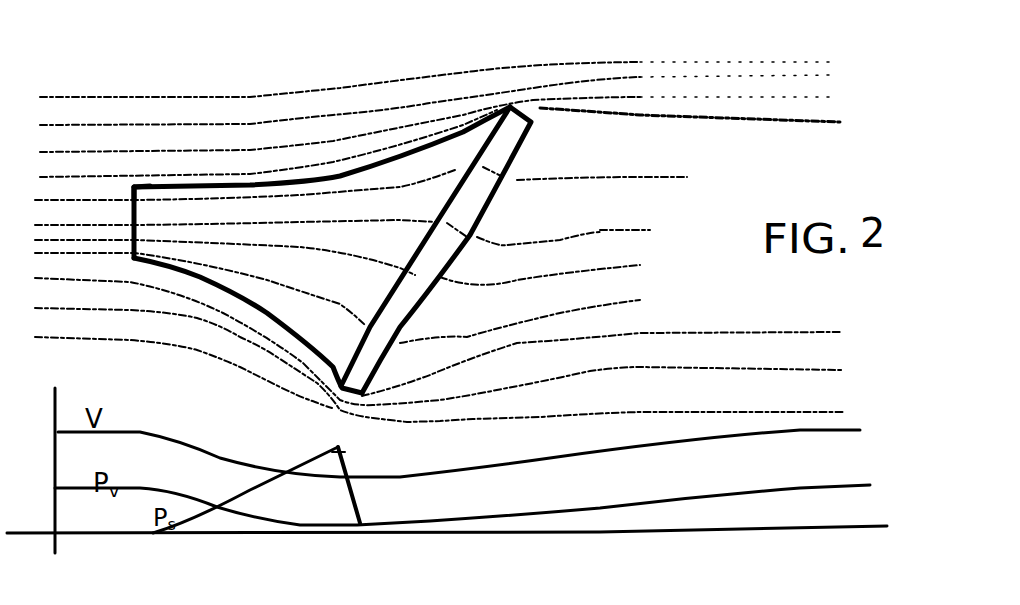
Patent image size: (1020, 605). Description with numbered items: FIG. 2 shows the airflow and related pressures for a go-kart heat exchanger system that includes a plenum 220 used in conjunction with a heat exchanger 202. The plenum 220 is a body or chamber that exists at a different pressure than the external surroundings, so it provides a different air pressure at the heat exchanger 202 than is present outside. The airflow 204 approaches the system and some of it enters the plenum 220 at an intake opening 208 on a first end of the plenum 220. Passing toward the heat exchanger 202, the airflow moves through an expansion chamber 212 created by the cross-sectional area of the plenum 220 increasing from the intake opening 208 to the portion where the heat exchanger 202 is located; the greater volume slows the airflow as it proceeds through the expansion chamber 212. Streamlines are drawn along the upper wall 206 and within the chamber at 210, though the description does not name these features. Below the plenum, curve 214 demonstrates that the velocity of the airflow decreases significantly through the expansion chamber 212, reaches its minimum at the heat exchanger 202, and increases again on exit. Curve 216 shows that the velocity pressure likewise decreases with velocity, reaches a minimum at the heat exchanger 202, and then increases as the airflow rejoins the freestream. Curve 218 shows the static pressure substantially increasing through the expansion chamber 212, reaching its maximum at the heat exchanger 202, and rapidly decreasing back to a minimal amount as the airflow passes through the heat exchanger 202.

The heat exchanger 202 is at (513, 136).
The airflow 204 is at (95, 188).
The upper channel wall 206 is at (427, 120).
The intake opening 208 is at (140, 213).
The streamline 210 is at (428, 200).
The expansion chamber 212 is at (330, 243).
The velocity curve 214 is at (517, 463).
The velocity pressure curve 216 is at (567, 510).
The static pressure curve 218 is at (348, 460).
The plenum 220 is at (273, 313).